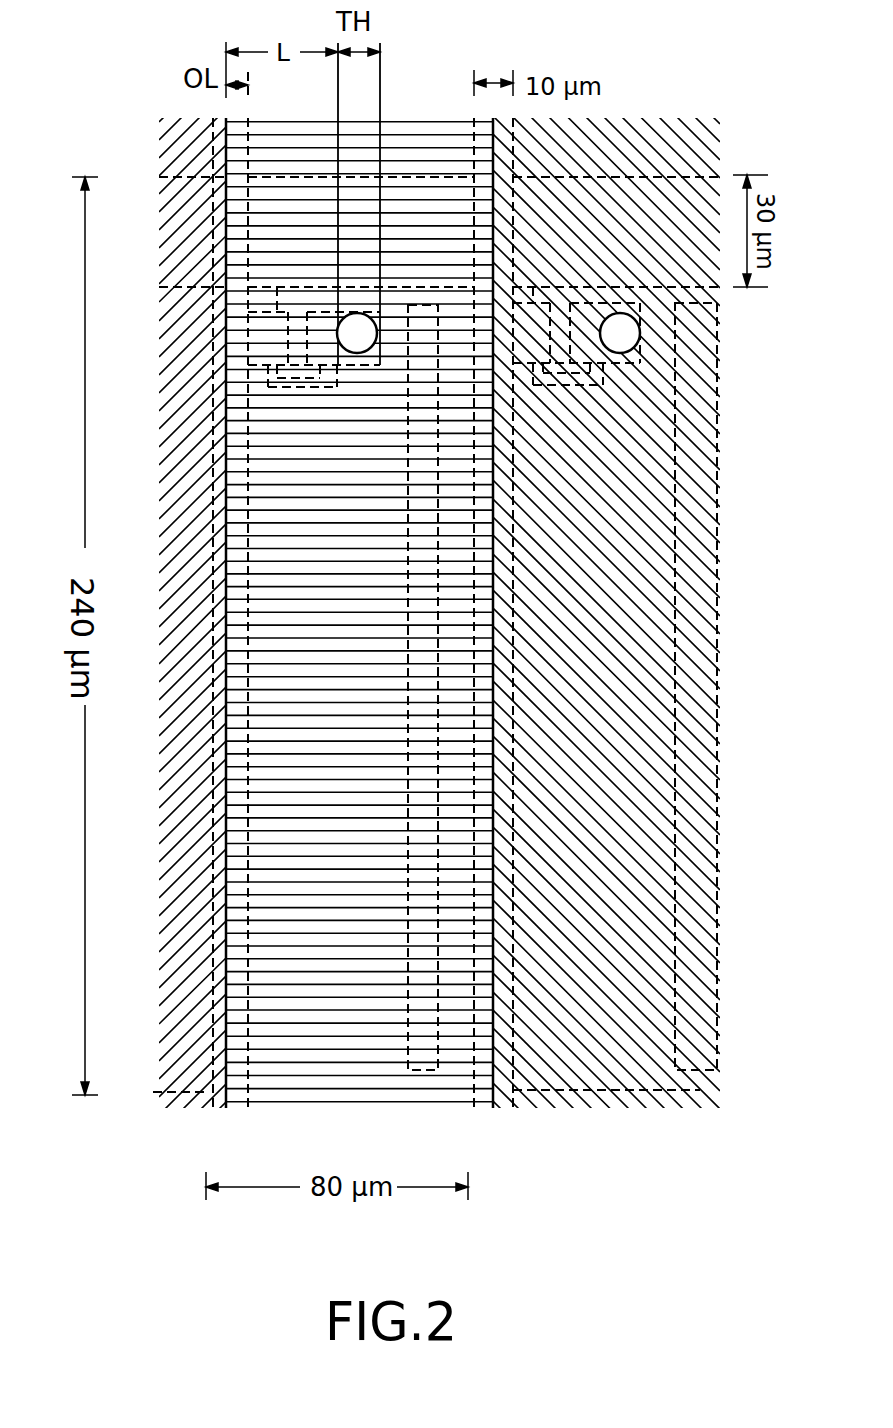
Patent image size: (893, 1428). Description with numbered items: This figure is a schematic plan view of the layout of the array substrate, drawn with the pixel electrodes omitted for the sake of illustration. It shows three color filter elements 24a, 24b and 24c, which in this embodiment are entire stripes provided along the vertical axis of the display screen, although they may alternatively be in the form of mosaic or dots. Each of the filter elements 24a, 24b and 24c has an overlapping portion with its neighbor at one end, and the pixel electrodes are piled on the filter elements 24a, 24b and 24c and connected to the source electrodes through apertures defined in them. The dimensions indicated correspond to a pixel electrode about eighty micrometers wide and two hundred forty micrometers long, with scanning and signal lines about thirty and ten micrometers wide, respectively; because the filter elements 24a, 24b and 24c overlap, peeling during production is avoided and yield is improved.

The filter element 24a is at (164, 1102).
The filter element 24b is at (325, 1103).
The filter element 24c is at (565, 1118).